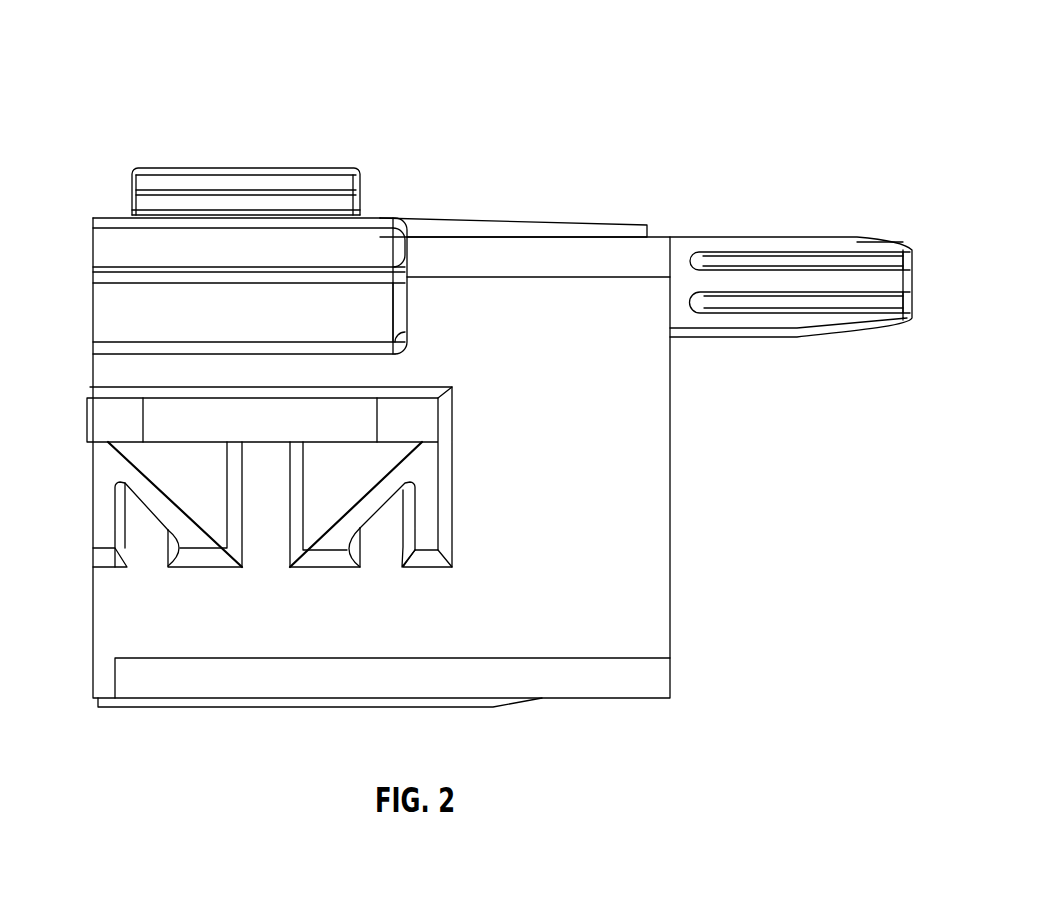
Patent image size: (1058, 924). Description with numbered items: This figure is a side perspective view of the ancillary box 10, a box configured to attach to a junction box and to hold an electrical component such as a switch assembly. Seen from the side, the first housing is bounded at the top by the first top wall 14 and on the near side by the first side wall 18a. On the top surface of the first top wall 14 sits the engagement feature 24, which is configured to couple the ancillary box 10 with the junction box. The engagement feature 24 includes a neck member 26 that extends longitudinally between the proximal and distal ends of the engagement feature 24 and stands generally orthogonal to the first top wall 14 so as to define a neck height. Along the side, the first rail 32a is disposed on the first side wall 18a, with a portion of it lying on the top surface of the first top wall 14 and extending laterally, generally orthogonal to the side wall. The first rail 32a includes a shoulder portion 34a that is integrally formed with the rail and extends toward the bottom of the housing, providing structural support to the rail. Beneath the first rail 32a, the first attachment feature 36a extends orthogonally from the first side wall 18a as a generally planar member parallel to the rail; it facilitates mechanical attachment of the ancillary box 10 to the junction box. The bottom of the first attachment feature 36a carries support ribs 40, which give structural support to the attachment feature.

The ancillary box 10 is at (667, 98).
The first top wall 14 is at (540, 220).
The first side wall 18a is at (618, 635).
The engagement feature 24 is at (233, 168).
The neck member 26 is at (132, 202).
The first rail 32a is at (380, 237).
The shoulder portion 34a is at (105, 313).
The first attachment feature 36a is at (103, 415).
The support ribs 40 is at (158, 498).